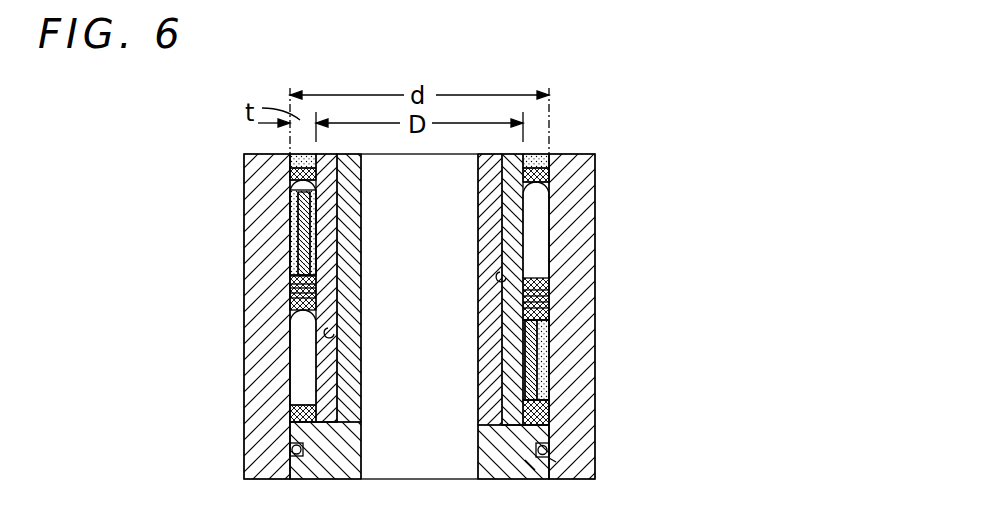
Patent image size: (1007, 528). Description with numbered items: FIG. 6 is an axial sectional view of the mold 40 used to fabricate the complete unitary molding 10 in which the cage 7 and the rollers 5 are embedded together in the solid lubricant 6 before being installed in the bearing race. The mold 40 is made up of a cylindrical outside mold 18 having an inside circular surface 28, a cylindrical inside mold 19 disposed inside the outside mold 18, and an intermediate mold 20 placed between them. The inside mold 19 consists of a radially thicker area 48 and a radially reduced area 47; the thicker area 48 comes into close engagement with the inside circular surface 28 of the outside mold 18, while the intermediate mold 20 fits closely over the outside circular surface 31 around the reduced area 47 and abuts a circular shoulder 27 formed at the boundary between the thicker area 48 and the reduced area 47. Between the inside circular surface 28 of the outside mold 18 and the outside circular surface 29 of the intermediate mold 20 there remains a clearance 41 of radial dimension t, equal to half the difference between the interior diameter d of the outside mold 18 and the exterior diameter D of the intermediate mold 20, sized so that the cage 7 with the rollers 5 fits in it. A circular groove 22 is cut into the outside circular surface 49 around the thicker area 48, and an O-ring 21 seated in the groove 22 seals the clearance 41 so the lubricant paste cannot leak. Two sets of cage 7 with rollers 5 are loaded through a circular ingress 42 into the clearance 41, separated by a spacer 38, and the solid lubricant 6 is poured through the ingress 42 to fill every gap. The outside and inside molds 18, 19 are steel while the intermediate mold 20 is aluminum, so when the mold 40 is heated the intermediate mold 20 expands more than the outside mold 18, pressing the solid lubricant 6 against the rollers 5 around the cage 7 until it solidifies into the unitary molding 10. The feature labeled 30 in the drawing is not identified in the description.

The rollers 5 is at (300, 345).
The solid lubricant 6 is at (292, 172).
The cage 7 is at (300, 182).
The complete unitary molding 10 is at (288, 208).
The outside mold 18 is at (300, 282).
The inside mold 19 is at (352, 270).
The intermediate mold 20 is at (328, 236).
The O-ring 21 is at (291, 447).
The circular groove 22 is at (289, 456).
The circular shoulder 27 is at (333, 410).
The inside circular surface 28 is at (290, 373).
The outside circular surface 29 is at (292, 272).
The bore 30 is at (345, 200).
The outside circular surface 31 is at (332, 334).
The spacer 38 is at (300, 298).
The mold 40 is at (598, 428).
The clearance 41 is at (298, 290).
The circular ingress 42 is at (302, 156).
The radially reduced area 47 is at (502, 275).
The radially thicker area 48 is at (533, 468).
The outside circular surface 49 is at (552, 460).